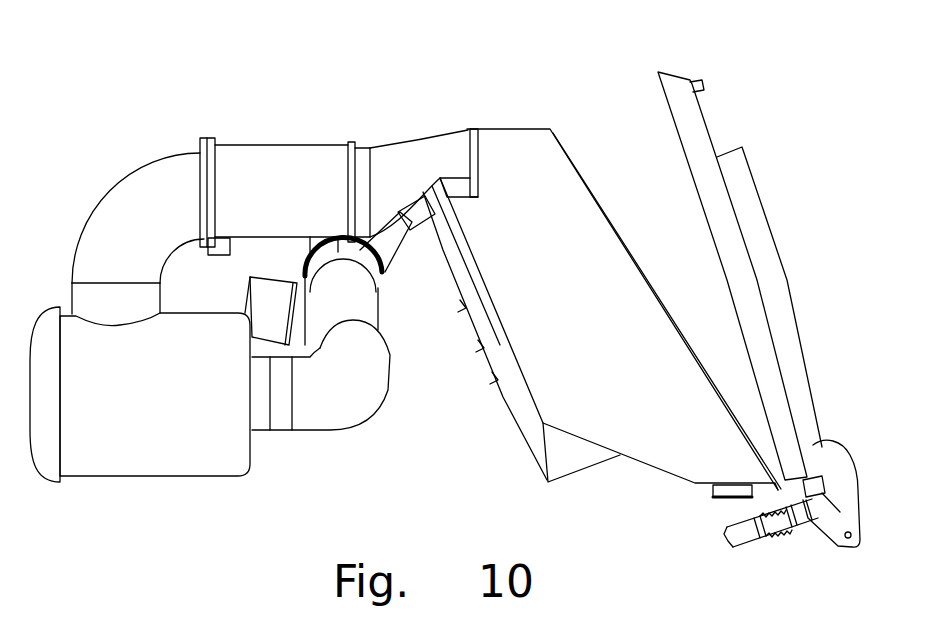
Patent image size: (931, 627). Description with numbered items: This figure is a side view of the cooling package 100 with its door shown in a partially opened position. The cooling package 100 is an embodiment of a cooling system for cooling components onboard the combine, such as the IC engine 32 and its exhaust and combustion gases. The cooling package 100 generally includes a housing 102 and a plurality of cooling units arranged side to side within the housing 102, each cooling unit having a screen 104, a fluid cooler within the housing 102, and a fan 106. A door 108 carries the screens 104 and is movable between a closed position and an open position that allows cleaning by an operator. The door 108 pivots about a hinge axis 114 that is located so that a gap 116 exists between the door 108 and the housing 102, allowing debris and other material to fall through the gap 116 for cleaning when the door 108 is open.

The cooling package 100 is at (760, 90).
The IC engine 32 is at (178, 490).
The housing 102 is at (507, 157).
The screen 104 is at (795, 258).
The fan 106 is at (482, 366).
The door 108 is at (670, 113).
The hinge axis 114 is at (848, 538).
The gap 116 is at (770, 452).